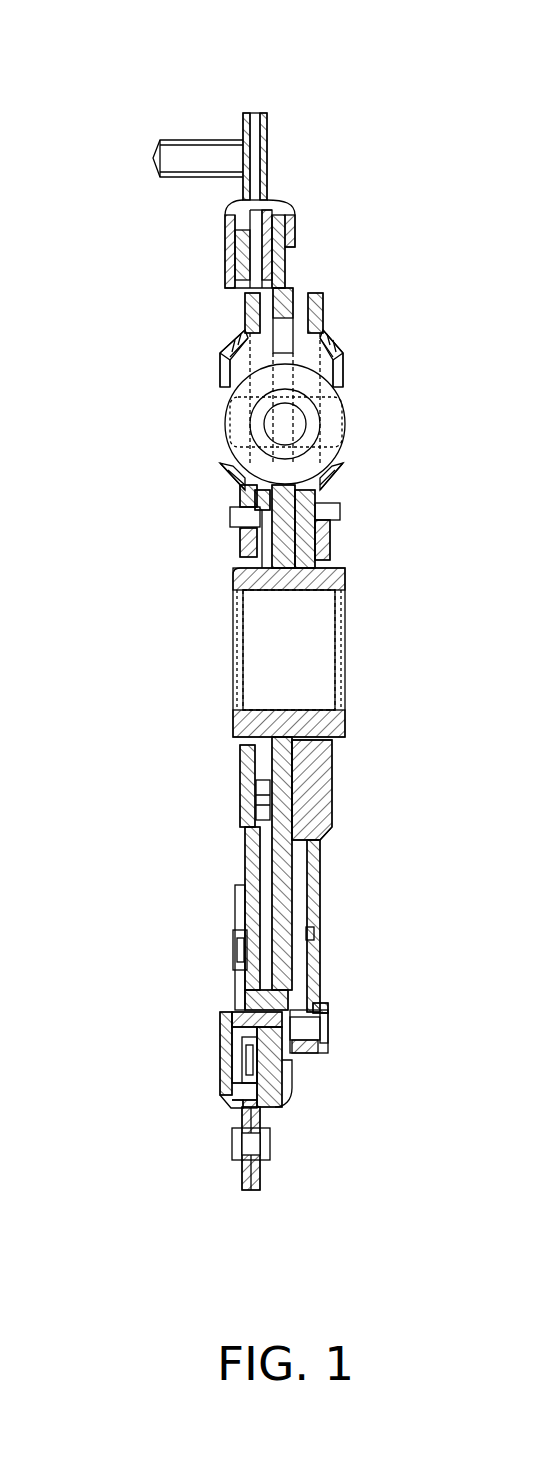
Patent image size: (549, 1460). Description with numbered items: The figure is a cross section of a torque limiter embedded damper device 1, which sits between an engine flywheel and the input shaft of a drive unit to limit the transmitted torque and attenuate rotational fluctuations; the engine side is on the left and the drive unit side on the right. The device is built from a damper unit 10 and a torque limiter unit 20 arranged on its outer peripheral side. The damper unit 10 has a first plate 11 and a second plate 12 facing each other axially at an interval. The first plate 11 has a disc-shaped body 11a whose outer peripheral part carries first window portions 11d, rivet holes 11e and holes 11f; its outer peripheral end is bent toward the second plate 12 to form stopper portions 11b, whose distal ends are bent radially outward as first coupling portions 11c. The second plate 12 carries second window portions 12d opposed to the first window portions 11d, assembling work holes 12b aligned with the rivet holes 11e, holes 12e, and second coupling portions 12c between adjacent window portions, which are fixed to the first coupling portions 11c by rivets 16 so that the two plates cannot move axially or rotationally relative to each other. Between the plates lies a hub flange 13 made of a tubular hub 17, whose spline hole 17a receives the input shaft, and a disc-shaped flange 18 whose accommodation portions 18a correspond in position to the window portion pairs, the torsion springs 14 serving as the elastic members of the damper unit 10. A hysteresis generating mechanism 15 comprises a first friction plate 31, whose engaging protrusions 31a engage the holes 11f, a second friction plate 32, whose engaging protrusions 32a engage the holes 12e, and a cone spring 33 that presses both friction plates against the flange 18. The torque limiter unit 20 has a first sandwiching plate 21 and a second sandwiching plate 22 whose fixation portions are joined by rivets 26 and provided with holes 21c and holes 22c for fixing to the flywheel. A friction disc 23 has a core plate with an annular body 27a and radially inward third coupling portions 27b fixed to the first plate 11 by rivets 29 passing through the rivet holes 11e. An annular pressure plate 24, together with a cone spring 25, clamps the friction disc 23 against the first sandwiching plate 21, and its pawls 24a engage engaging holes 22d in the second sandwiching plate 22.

The torque limiter embedded damper device 1 is at (397, 135).
The damper unit 10 is at (172, 428).
The first plate 11 is at (228, 470).
The body 11a is at (250, 545).
The stopper portions 11b is at (288, 990).
The first coupling portions 11c is at (290, 1060).
The first window portions 11d is at (232, 358).
The rivet holes 11e is at (236, 945).
The holes 11f is at (248, 532).
The second plate 12 is at (330, 335).
The assembling work holes 12b is at (318, 930).
The second coupling portions 12c is at (325, 1003).
The second window portions 12d is at (345, 365).
The holes 12e is at (340, 520).
The hub flange 13 is at (340, 568).
The torsion springs 14 is at (335, 405).
The hysteresis generating mechanism 15 is at (262, 560).
The rivets 16 is at (328, 1035).
The hub 17 is at (345, 580).
The spline hole 17a is at (320, 700).
The flange 18 is at (290, 300).
The accommodation portions 18a is at (262, 332).
The torque limiter unit 20 is at (336, 205).
The first sandwiching plate 21 is at (225, 225).
The holes 21c is at (243, 148).
The second sandwiching plate 22 is at (290, 197).
The holes 22c is at (267, 150).
The engaging holes 22d is at (270, 1100).
The friction disc 23 is at (235, 265).
The pressure plate 24 is at (290, 225).
The pawls 24a is at (262, 1107).
The cone spring 25 is at (285, 252).
The rivets 26 is at (238, 1145).
The body 27a is at (226, 1082).
The third coupling portions 27b is at (245, 908).
The rivets 29 is at (240, 965).
The first friction plate 31 is at (245, 850).
The engaging protrusions 31a is at (235, 518).
The second friction plate 32 is at (332, 780).
The engaging protrusions 32a is at (305, 500).
The cone spring 33 is at (258, 795).